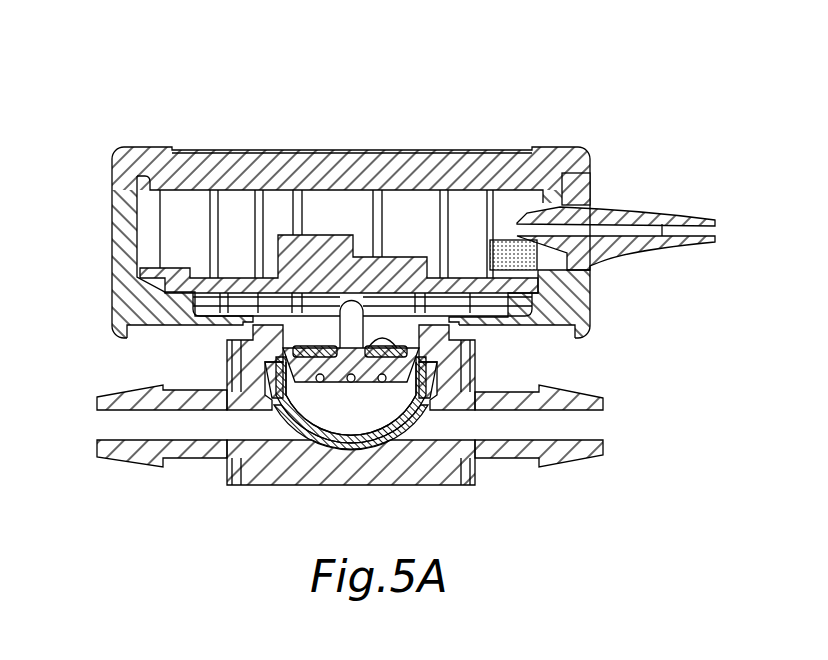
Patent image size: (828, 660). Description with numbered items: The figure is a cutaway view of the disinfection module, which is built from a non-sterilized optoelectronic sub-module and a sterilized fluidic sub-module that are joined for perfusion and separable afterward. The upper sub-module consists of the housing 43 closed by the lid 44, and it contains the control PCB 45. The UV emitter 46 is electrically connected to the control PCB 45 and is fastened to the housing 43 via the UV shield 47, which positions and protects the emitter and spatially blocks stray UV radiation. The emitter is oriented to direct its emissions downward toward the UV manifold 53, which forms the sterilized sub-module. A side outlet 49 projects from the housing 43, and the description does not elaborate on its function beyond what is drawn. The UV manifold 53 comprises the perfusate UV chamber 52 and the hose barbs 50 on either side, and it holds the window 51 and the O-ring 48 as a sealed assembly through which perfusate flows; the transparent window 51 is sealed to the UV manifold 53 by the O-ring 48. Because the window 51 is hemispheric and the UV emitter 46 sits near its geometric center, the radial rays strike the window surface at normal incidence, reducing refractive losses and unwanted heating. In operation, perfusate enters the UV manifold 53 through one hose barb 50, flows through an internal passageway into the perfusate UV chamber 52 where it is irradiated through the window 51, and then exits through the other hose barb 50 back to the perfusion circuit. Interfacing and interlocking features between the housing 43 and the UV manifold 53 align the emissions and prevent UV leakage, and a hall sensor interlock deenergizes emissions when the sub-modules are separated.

The housing 43 is at (113, 242).
The lid 44 is at (143, 147).
The control PCB 45 is at (301, 235).
The UV emitter 46 is at (339, 397).
The UV shield 47 is at (392, 345).
The O-ring 48 is at (428, 380).
The nozzle 49 is at (610, 213).
The hose barb 50 is at (567, 397).
The window 51 is at (390, 420).
The perfusate UV chamber 52 is at (332, 437).
The UV manifold 53 is at (265, 457).